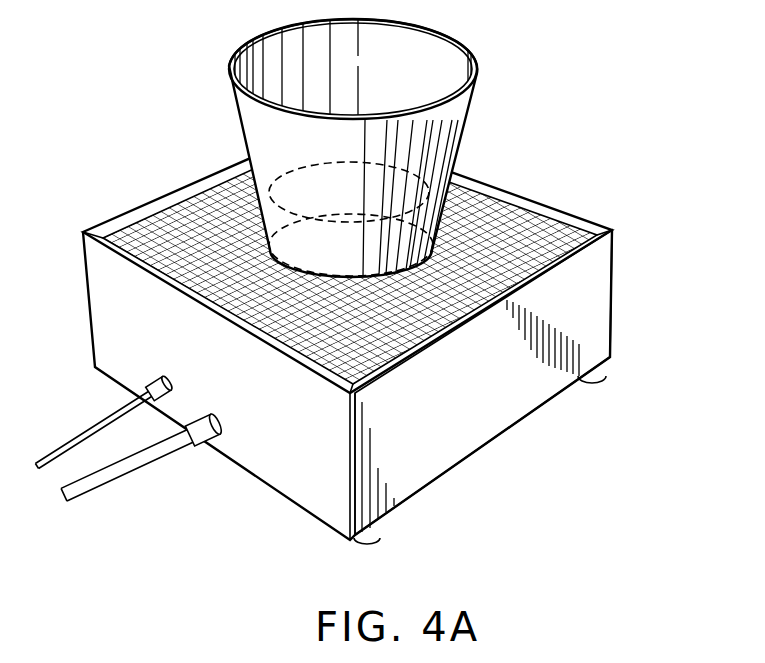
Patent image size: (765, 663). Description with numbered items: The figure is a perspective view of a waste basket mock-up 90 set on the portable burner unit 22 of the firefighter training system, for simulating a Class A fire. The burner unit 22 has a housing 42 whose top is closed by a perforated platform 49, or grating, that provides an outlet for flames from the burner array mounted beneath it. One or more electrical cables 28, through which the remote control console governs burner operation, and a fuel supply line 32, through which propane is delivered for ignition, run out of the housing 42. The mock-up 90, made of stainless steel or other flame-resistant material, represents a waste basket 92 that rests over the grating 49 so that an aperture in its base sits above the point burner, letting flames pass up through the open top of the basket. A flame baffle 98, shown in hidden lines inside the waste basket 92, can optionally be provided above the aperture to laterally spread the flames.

The portable burner unit 22 is at (632, 277).
The electrical cable 28 is at (88, 437).
The fuel supply line 32 is at (135, 465).
The housing 42 is at (490, 387).
The perforated platform 49 is at (543, 250).
The waste basket mock-up 90 is at (492, 80).
The waste basket 92 is at (248, 128).
The flame baffle 98 is at (384, 196).